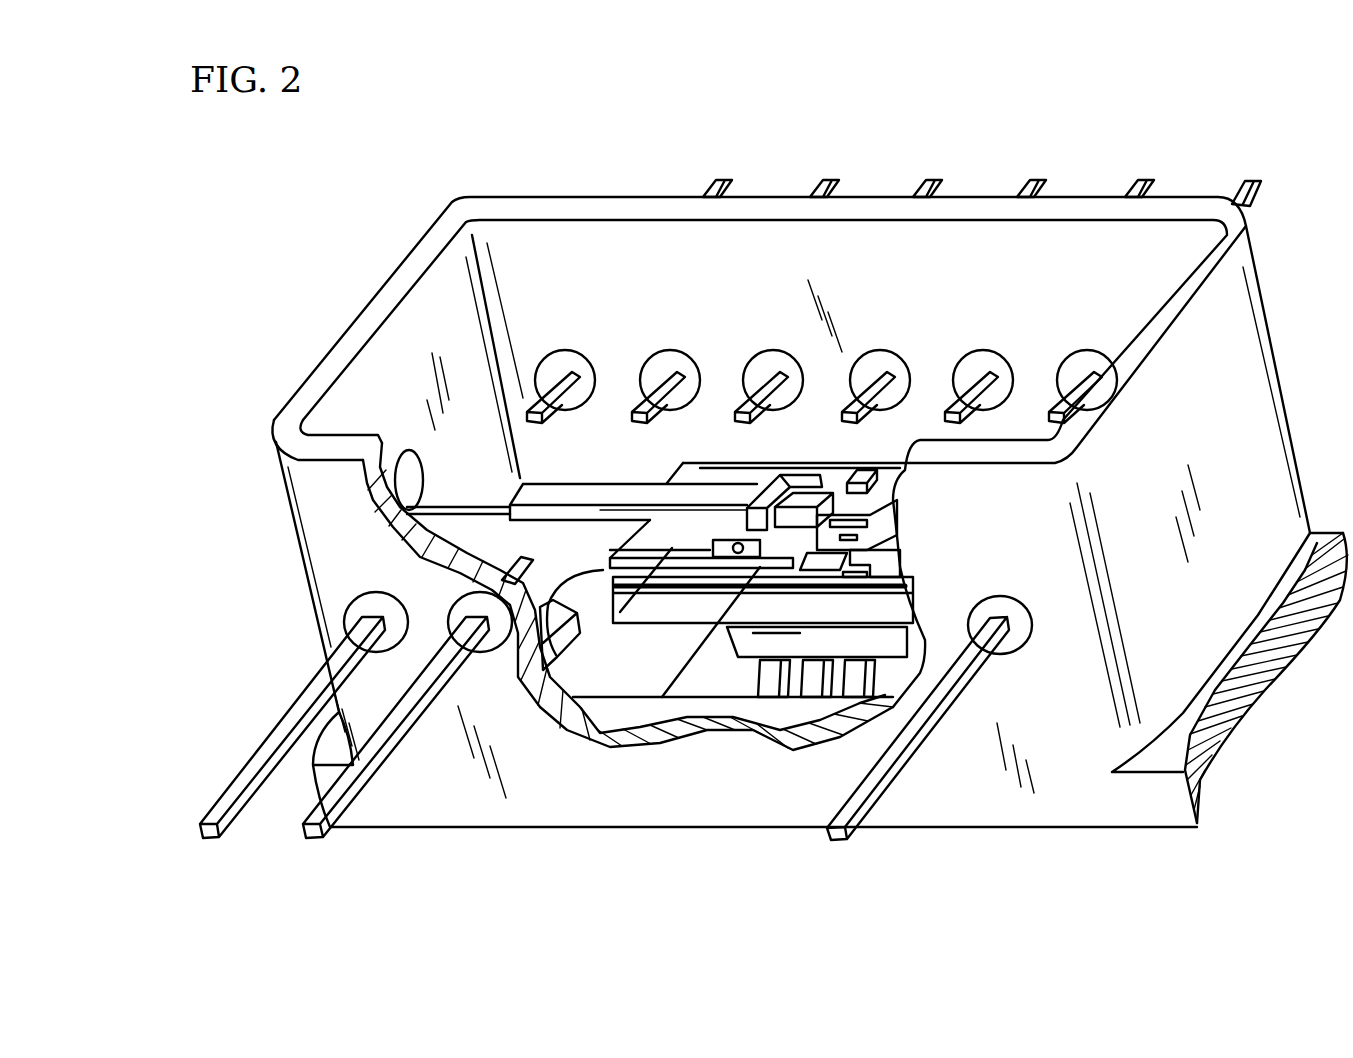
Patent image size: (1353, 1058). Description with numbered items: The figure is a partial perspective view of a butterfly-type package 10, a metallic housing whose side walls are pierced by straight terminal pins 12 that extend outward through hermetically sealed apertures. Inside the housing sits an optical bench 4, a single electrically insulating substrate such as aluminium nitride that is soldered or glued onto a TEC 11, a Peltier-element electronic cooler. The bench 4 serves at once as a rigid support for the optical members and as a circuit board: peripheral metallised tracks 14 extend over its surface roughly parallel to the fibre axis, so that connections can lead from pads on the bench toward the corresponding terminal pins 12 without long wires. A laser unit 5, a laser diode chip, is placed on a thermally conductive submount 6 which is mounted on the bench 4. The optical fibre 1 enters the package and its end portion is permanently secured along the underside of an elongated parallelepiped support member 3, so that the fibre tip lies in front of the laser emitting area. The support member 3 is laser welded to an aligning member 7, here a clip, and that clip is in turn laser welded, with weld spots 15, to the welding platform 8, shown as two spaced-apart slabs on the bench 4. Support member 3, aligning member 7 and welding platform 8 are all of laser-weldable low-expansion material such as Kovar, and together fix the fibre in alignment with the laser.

The package 10 is at (378, 288).
The optical fibre 1 is at (455, 505).
The support member 3 is at (600, 490).
The welding platform 8 is at (717, 477).
The aligning member 7 is at (787, 470).
The laser unit 5 is at (877, 473).
The submount 6 is at (900, 477).
The metallised tracks 14 is at (598, 610).
The weld spots 15 is at (640, 557).
The optical bench 4 is at (757, 587).
The TEC 11 is at (817, 640).
The terminal pins 12 is at (888, 780).